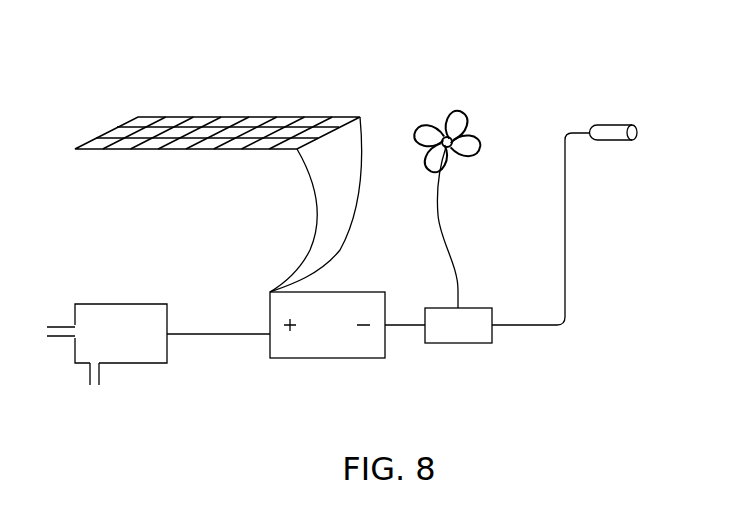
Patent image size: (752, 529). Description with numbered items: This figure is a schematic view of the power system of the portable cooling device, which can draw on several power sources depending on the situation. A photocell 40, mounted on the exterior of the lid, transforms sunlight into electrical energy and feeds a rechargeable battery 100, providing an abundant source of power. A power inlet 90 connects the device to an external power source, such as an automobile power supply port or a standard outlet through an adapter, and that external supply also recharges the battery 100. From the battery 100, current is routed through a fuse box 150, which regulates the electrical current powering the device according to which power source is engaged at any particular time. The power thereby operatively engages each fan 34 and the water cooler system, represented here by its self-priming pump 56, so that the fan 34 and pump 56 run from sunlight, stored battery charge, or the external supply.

The photocell 40 is at (205, 117).
The self-priming pump 56 is at (118, 317).
The battery 100 is at (307, 355).
The fuse box 150 is at (472, 335).
The fan 34 is at (450, 118).
The power inlet 90 is at (618, 128).